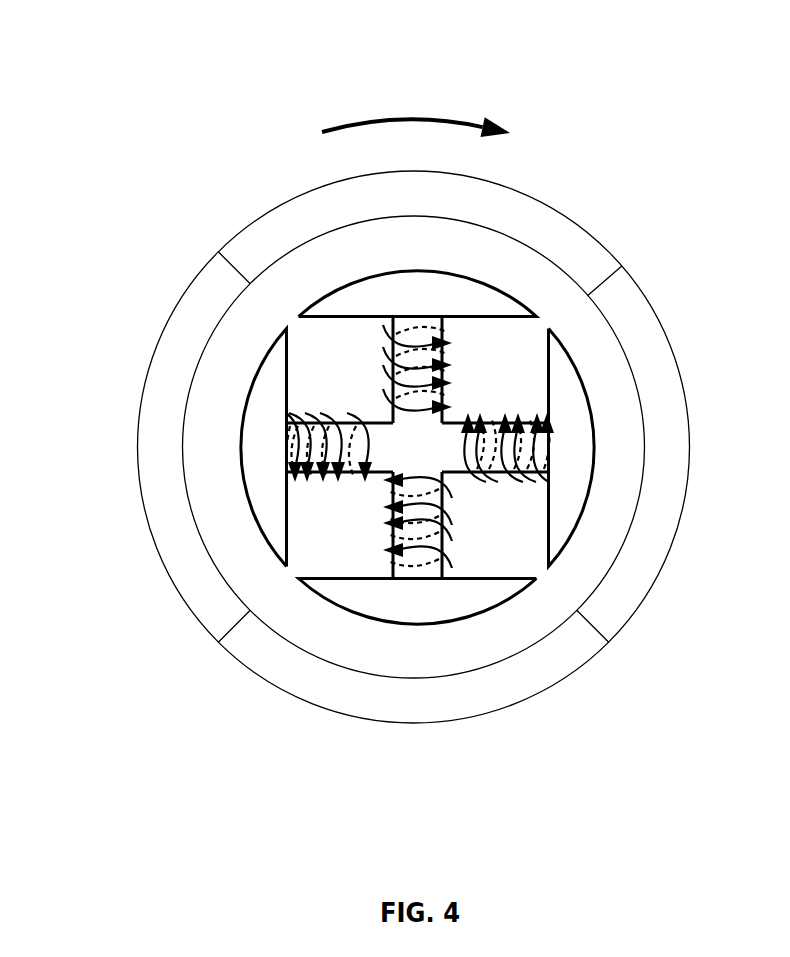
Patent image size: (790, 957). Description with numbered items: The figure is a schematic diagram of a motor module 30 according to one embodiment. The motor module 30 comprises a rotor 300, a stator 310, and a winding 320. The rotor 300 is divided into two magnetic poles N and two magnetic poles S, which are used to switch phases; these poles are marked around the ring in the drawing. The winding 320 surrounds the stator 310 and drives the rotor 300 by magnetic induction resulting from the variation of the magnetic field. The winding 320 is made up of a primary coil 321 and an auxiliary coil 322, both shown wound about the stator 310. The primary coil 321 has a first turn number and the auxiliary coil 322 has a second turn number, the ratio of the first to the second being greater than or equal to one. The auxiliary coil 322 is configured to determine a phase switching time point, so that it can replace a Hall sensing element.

The motor module 30 is at (653, 50).
The rotor 300 is at (557, 211).
The stator 310 is at (413, 267).
The winding 320 is at (127, 182).
The primary coil 321 is at (446, 560).
The auxiliary coil 322 is at (429, 557).